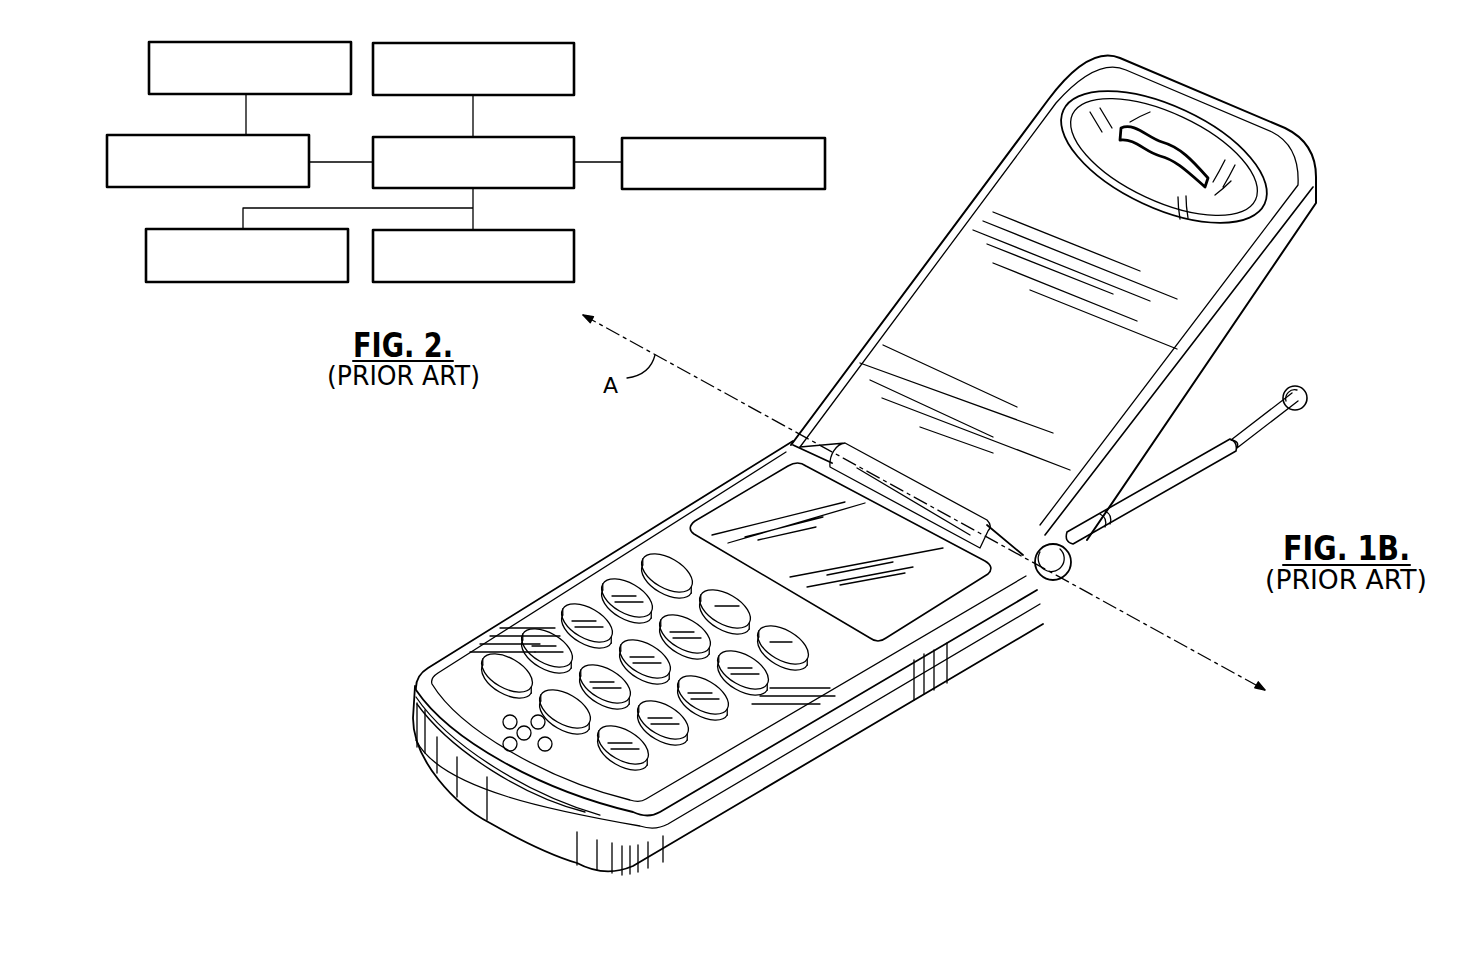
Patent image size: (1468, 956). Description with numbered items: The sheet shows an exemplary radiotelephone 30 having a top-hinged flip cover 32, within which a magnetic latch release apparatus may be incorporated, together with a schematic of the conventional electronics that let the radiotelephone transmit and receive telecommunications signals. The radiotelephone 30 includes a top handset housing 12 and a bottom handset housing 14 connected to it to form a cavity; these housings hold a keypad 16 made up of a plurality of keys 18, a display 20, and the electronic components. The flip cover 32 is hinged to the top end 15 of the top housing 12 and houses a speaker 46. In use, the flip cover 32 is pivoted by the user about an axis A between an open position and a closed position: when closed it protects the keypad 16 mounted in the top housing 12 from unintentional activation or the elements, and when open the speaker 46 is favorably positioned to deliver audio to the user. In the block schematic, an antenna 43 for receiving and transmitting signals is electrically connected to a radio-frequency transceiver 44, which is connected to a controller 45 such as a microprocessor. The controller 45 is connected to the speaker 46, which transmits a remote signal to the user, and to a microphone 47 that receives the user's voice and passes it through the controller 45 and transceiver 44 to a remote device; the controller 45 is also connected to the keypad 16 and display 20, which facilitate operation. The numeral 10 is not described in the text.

In FIG. 1B, the portable radiotelephone 10 is at (977, 378).
In FIG. 1B, the top handset housing 12 is at (673, 807).
In FIG. 1B, the bottom handset housing 14 is at (928, 692).
In FIG. 1B, the top end 15 is at (1033, 582).
In FIG. 2, the keypad 16 is at (157, 229).
In FIG. 1B, the keypad 16 is at (793, 692).
In FIG. 1B, the keys 18 is at (630, 747).
In FIG. 2, the display 20 is at (527, 230).
In FIG. 1B, the display 20 is at (915, 550).
In FIG. 1B, the radiotelephone 30 is at (1345, 143).
In FIG. 1B, the flip cover 32 is at (1242, 282).
In FIG. 2, the antenna 43 is at (260, 42).
In FIG. 1B, the antenna 43 is at (1187, 475).
In FIG. 2, the radio-frequency transceiver 44 is at (232, 135).
In FIG. 2, the controller 45 is at (508, 137).
In FIG. 2, the speaker 46 is at (527, 43).
In FIG. 1B, the speaker 46 is at (1177, 148).
In FIG. 2, the microphone 47 is at (755, 138).